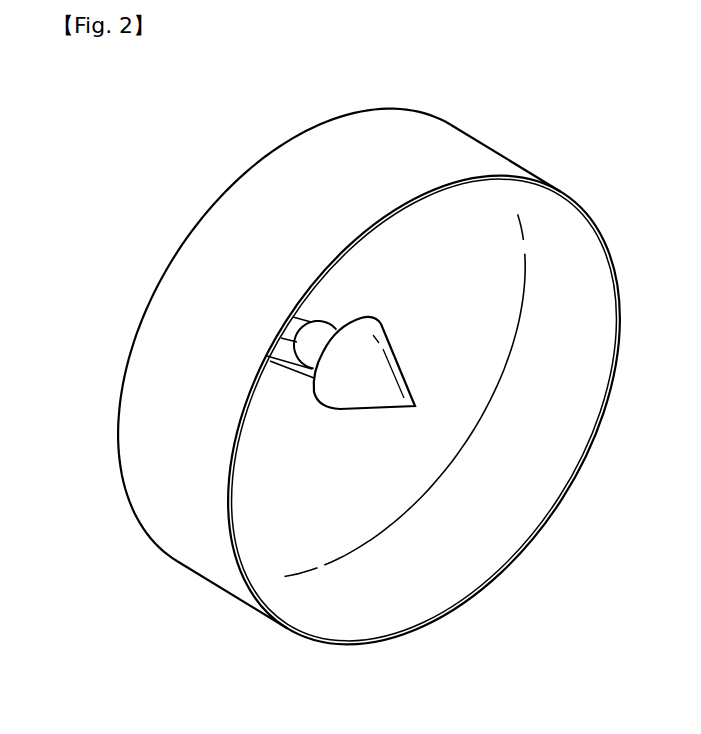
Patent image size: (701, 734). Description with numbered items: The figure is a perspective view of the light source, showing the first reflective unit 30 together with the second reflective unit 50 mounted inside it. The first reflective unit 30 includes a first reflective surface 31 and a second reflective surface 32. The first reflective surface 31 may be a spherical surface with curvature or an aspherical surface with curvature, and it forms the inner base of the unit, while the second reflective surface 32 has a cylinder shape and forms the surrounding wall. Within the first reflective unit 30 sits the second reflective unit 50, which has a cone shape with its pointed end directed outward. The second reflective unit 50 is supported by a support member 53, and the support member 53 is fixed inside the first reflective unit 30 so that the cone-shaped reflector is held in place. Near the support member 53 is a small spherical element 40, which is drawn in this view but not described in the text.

The first reflective unit 30 is at (305, 170).
The first reflective surface 31 is at (305, 503).
The second reflective surface 32 is at (435, 558).
The ball 40 is at (325, 323).
The second reflective unit 50 is at (367, 390).
The support member 53 is at (297, 371).